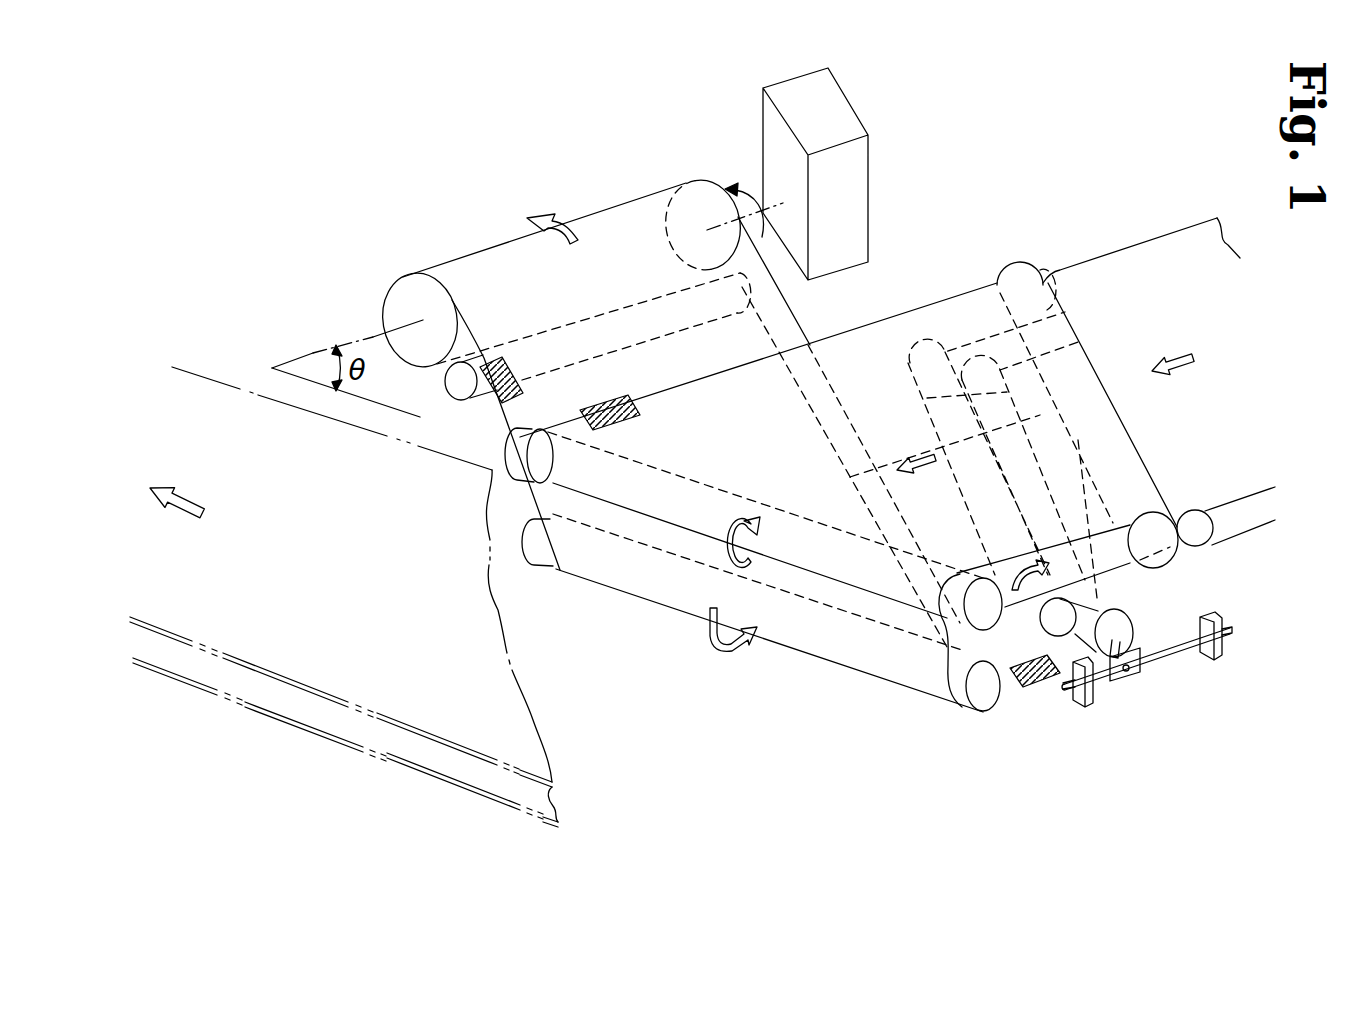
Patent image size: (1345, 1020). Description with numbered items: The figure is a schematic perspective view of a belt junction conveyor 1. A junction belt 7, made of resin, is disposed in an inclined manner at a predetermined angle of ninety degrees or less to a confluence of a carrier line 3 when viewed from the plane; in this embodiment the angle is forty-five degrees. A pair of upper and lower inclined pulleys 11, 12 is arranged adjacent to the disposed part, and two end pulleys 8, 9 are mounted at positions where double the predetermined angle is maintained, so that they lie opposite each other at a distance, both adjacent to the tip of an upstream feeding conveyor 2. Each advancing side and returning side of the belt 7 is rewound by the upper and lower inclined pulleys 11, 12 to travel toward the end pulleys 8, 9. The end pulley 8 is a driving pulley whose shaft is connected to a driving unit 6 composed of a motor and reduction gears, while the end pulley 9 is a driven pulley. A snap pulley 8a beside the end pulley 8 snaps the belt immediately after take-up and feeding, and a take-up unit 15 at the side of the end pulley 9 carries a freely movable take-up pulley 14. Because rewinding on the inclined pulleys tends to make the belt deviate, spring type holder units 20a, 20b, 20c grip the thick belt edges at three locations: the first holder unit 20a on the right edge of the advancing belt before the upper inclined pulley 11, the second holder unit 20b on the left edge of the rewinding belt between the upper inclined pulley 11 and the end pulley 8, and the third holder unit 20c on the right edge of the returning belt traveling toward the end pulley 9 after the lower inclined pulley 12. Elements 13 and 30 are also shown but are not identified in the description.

The belt junction conveyor 1 is at (968, 176).
The upstream feeding conveyor 2 is at (1152, 262).
The carrier line 3 is at (197, 403).
The driving unit 6 is at (806, 96).
The junction belt 7 is at (801, 336).
The end pulley 8 is at (402, 298).
The snap pulley 8a is at (445, 382).
The end pulley 9 is at (1018, 268).
The upper inclined pulley 11 is at (623, 498).
The lower inclined pulley 12 is at (670, 580).
The roller 13 is at (1043, 631).
The take-up pulley 14 is at (1133, 620).
The take-up unit 15 is at (1168, 674).
The first holder unit 20a is at (618, 395).
The second holder unit 20b is at (478, 403).
The third holder unit 20c is at (1037, 687).
The sheet conveying direction 30 is at (195, 493).